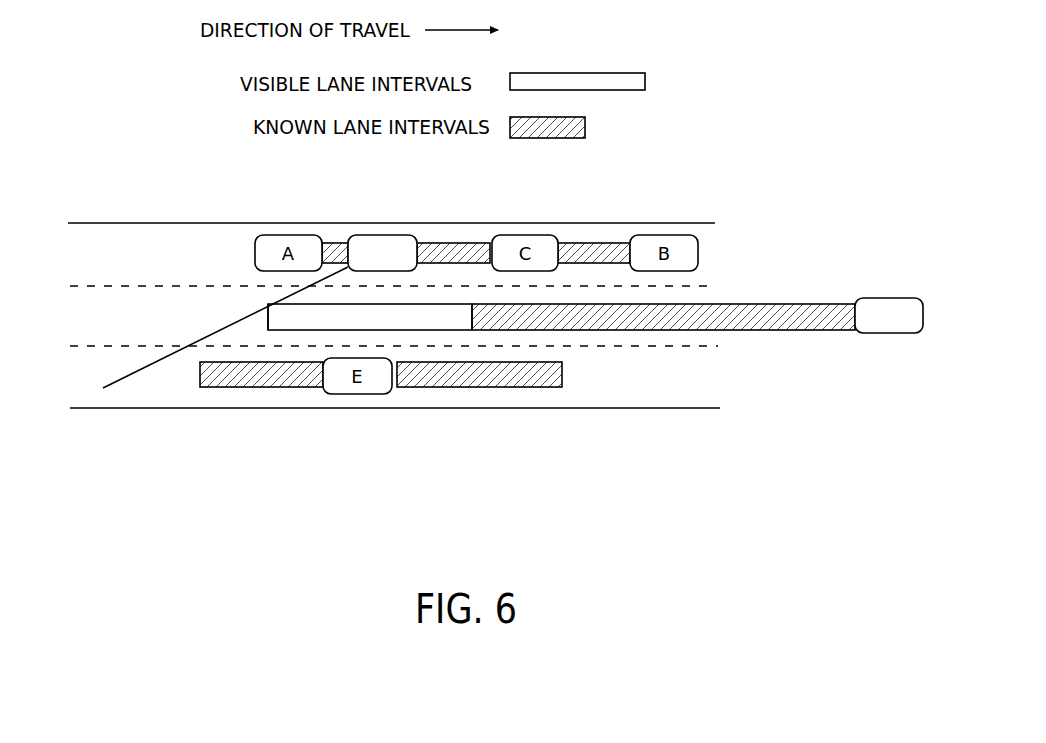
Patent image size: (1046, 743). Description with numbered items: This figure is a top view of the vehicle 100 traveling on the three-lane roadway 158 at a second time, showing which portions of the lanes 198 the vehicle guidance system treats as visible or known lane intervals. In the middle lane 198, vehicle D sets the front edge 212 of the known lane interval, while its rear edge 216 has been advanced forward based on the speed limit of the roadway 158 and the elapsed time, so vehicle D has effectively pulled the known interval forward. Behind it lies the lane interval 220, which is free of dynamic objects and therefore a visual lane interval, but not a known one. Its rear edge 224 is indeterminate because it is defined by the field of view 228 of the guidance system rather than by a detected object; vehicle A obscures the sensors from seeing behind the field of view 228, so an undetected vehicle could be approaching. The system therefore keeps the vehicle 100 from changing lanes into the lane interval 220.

The vehicle 100 is at (377, 238).
The roadway 158 is at (712, 200).
The lane 198 is at (63, 258).
The front edge 212 is at (866, 298).
The rear edge 216 is at (472, 318).
The lane interval 220 is at (293, 331).
The indeterminate rear edge 224 is at (268, 318).
The field of view 228 is at (133, 393).